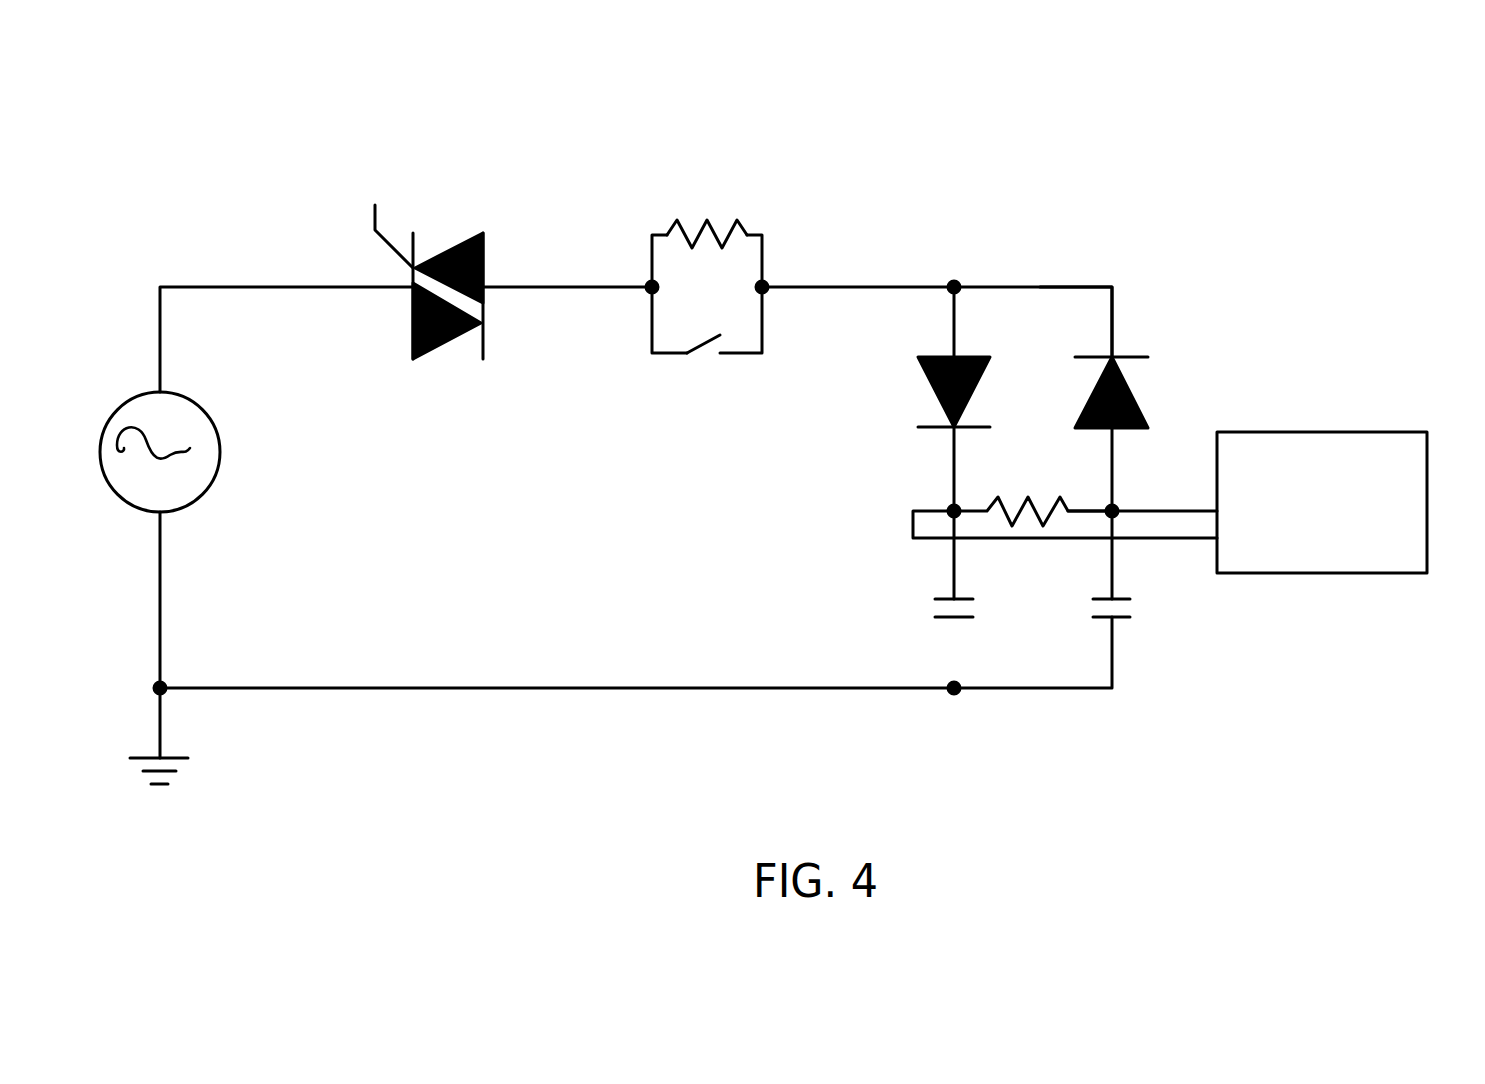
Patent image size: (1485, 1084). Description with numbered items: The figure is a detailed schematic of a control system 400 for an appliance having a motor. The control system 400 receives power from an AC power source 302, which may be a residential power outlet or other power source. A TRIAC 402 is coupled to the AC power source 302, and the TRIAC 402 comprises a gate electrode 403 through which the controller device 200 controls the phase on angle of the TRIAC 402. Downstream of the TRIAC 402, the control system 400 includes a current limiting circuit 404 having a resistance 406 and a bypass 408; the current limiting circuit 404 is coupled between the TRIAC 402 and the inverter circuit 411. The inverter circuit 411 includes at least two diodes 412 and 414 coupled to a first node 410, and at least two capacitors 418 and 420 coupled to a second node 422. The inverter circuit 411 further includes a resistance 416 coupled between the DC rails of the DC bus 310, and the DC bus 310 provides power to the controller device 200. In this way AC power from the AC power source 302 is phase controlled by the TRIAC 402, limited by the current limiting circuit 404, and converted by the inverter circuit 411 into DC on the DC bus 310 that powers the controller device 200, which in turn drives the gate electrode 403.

The control system 400 is at (1285, 138).
The AC power source 302 is at (195, 412).
The TRIAC 402 is at (448, 200).
The gate electrode 403 is at (368, 242).
The current limiting circuit 404 is at (760, 254).
The resistance 406 is at (785, 254).
The bypass 408 is at (785, 353).
The first node 410 is at (960, 263).
The inverter circuit 411 is at (1063, 263).
The diode 412 is at (980, 338).
The diode 414 is at (1130, 338).
The DC bus 310 is at (930, 489).
The resistance 416 is at (1010, 490).
The controller device 200 is at (1393, 432).
The capacitor 418 is at (975, 634).
The capacitor 420 is at (1130, 634).
The second node 422 is at (958, 716).